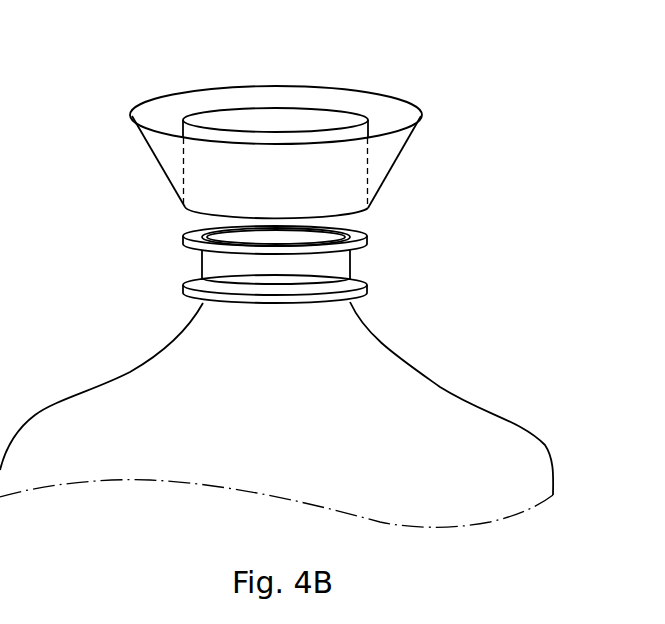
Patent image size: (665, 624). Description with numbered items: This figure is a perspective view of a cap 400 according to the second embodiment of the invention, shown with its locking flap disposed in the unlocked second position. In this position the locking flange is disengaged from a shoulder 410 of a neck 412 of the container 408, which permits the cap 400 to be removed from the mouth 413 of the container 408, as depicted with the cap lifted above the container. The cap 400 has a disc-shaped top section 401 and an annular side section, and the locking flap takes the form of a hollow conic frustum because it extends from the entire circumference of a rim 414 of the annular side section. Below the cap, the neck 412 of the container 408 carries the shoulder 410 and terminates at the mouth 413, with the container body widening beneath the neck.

The cap 400 is at (322, 130).
The disc-shaped top section 401 is at (273, 117).
The container 408 is at (552, 460).
The shoulder 410 is at (365, 290).
The neck 412 is at (355, 265).
The mouth 413 is at (255, 235).
The rim 414 is at (368, 208).